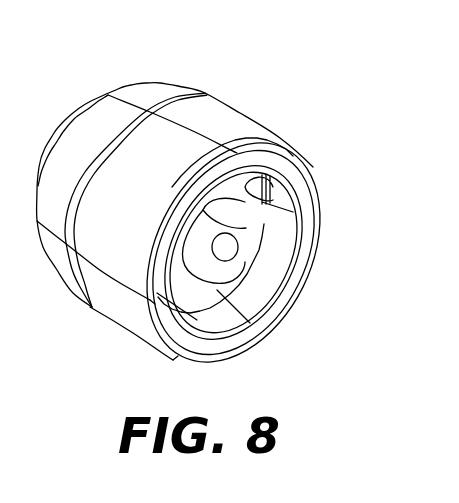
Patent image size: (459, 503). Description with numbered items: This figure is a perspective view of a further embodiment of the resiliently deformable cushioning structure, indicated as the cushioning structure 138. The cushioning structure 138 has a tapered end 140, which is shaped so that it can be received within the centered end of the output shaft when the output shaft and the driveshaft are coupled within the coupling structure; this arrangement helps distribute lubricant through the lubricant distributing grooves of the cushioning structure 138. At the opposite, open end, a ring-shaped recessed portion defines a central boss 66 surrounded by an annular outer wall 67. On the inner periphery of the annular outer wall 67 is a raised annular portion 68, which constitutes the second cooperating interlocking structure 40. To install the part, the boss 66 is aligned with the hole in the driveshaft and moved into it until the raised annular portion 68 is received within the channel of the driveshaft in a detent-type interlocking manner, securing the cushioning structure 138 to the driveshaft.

The cushioning structure 138 is at (239, 77).
The tapered end 140 is at (66, 126).
The annular outer wall 67 is at (304, 177).
The boss 66 is at (228, 243).
The second cooperating interlocking structure 40 is at (266, 271).
The raised annular portion 68 is at (224, 288).